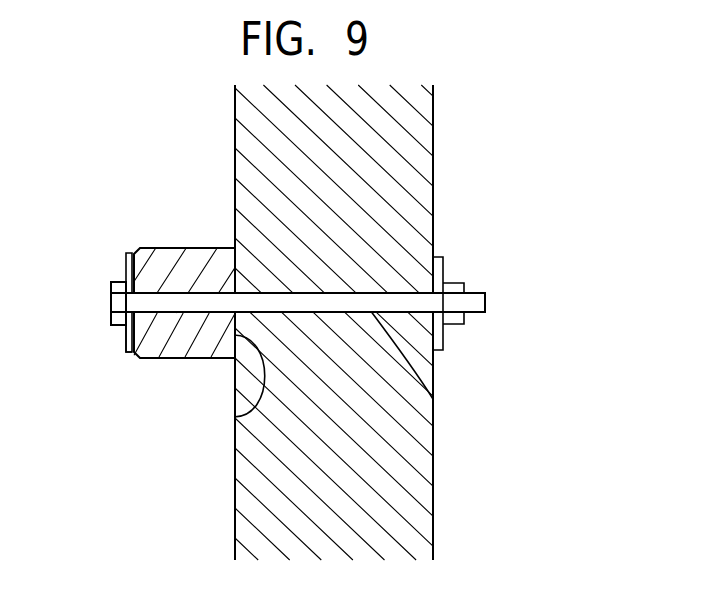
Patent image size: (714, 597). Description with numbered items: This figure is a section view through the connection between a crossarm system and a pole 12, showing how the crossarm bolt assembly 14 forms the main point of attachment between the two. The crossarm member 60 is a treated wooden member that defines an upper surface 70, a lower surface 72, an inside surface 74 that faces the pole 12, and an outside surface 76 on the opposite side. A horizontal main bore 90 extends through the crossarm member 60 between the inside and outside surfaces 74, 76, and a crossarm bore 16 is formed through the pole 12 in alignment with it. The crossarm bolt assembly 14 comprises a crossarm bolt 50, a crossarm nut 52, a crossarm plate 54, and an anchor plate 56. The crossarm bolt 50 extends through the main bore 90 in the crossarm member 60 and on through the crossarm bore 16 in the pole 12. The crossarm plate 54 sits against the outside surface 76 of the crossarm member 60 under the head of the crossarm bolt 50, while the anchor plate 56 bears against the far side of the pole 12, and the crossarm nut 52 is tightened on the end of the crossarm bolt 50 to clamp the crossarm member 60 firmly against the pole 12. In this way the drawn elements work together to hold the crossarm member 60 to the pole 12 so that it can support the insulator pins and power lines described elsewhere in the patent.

The pole 12 is at (418, 454).
The crossarm bolt assembly 14 is at (490, 283).
The crossarm bore 16 is at (433, 399).
The crossarm bolt 50 is at (112, 305).
The crossarm nut 52 is at (455, 321).
The crossarm plate 54 is at (128, 270).
The anchor plate 56 is at (438, 333).
The crossarm member 60 is at (157, 258).
The upper surface 70 is at (186, 247).
The lower surface 72 is at (180, 358).
The inside surface 74 is at (234, 417).
The outside surface 76 is at (128, 339).
The main bore 90 is at (156, 313).